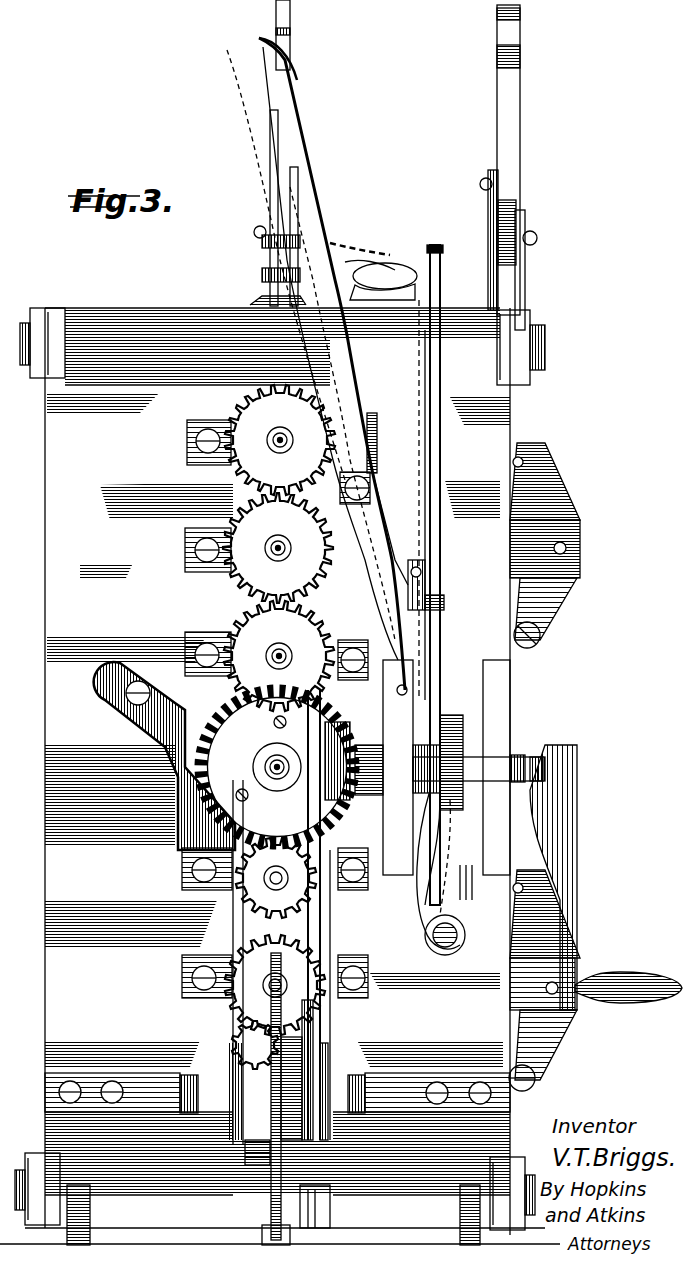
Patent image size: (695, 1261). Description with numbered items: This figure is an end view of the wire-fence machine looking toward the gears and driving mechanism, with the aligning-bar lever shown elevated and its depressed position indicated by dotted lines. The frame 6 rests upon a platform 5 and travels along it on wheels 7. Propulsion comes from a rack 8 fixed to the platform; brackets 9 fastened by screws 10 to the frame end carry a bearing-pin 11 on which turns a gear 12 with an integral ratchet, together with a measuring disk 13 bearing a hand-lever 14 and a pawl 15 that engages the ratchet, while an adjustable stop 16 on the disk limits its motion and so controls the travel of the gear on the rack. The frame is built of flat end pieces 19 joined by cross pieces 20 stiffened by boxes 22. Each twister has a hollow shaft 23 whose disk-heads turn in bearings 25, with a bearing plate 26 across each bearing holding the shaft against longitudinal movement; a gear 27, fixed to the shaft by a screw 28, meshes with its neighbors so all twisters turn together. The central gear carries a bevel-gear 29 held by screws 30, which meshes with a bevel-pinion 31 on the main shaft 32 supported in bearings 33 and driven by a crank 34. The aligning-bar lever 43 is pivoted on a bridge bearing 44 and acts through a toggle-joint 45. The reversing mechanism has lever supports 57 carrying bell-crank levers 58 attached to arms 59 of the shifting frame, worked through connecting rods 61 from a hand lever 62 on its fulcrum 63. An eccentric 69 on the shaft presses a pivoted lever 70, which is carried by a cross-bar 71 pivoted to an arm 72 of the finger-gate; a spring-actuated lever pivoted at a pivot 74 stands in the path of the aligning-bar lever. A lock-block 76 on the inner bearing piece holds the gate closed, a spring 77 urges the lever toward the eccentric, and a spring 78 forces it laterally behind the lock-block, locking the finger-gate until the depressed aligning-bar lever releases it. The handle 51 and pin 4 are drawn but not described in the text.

The pivot pin 4 is at (287, 440).
The platform 5 is at (290, 1240).
The frame 6 is at (45, 793).
The wheels 7 is at (273, 1204).
The rack 8 is at (262, 1236).
The brackets 9 is at (281, 962).
The screws 10 is at (124, 700).
The bearing-pin 11 is at (330, 1205).
The gear 12 is at (257, 1156).
The measuring disk 13 is at (305, 200).
The hand-lever 14 is at (333, 715).
The pawl 15 is at (281, 965).
The adjustable stop 16 is at (330, 1190).
The end pieces 19 is at (282, 391).
The cross pieces 20 is at (38, 378).
The boxes 22 is at (47, 312).
The hollow shaft 23 is at (284, 446).
The bearings 25 is at (285, 554).
The bearing plate 26 is at (208, 420).
The gear 27 is at (279, 727).
The screw 28 is at (284, 884).
The bevel-gear 29 is at (277, 767).
The screws 30 is at (247, 798).
The bevel-pinion 31 is at (348, 724).
The shaft 32 is at (517, 755).
The bearings 33 is at (463, 767).
The crank 34 is at (584, 860).
The lever 43 is at (290, 44).
The bridge bearing 44 is at (262, 282).
The toggle-joint 45 is at (266, 245).
The handle 51 is at (601, 987).
The lever supports 57 is at (567, 552).
The bell-crank levers 58 is at (548, 503).
The arms 59 is at (540, 637).
The connecting rods 61 is at (488, 225).
The hand lever 62 is at (518, 94).
The fulcrum 63 is at (532, 238).
The cam or eccentric 69 is at (452, 715).
The pivoted lever 70 is at (430, 505).
The cross-bar 71 is at (392, 262).
The arm 72 is at (441, 290).
The pivot 74 is at (375, 500).
The lock-block 76 is at (397, 770).
The spring 77 is at (452, 822).
The spring 78 is at (424, 925).